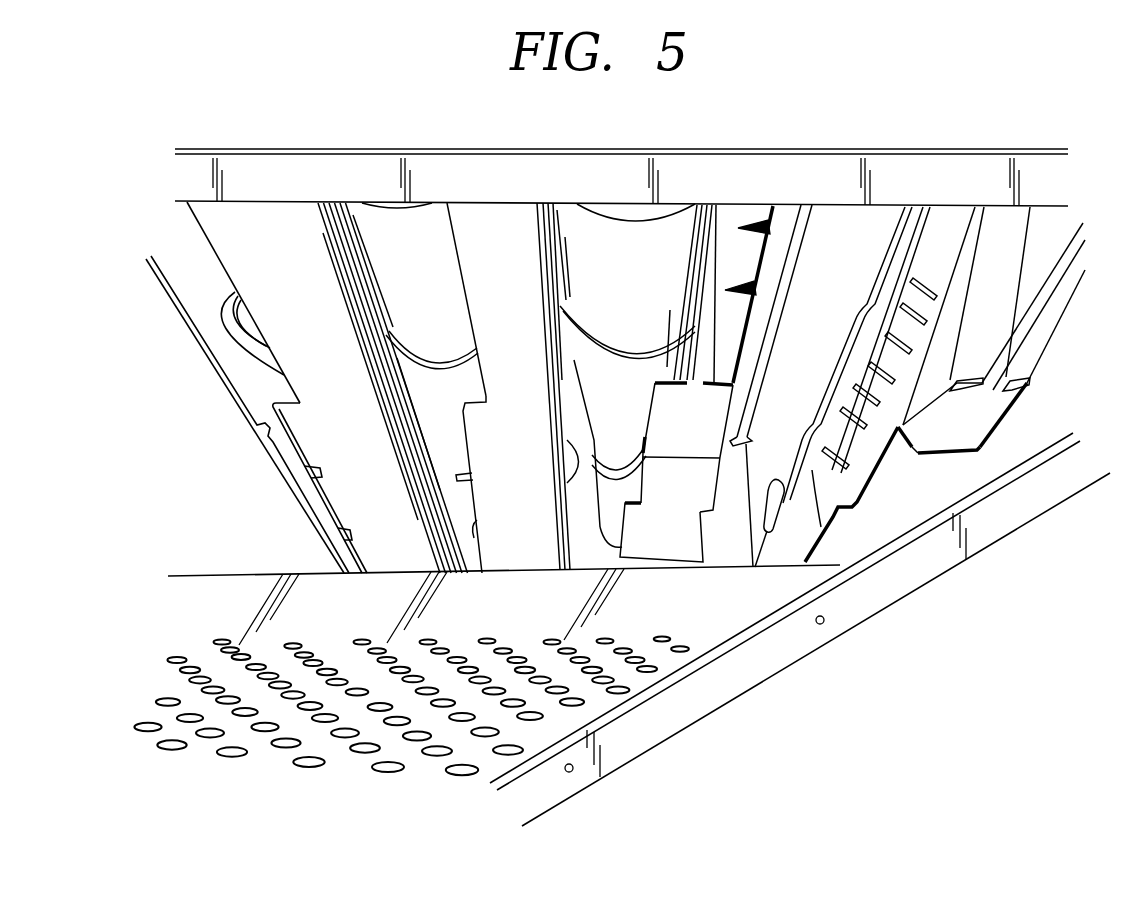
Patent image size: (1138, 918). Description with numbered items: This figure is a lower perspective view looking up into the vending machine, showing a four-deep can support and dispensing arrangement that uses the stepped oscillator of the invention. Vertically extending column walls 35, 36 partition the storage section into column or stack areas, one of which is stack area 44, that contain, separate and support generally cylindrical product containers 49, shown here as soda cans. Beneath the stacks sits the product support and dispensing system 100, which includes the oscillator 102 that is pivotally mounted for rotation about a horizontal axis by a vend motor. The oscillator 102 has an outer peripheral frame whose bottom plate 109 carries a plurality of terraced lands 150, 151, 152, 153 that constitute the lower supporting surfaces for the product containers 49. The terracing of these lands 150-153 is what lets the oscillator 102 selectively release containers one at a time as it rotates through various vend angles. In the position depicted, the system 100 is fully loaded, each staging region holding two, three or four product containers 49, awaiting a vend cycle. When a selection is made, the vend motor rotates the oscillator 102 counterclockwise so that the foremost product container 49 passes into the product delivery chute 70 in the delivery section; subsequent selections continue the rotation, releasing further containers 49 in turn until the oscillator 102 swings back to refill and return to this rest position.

The column wall 35 is at (567, 483).
The column wall 36 is at (778, 518).
The stack area 44 is at (606, 560).
The product container 49 is at (632, 238).
The product delivery chute 70 is at (670, 622).
The product support and dispensing system 100 is at (795, 220).
The oscillator 102 is at (742, 292).
The bottom plate 109 is at (725, 215).
The terraced land 150 is at (708, 315).
The terraced land 151 is at (670, 407).
The terraced land 152 is at (667, 472).
The terraced land 153 is at (655, 542).